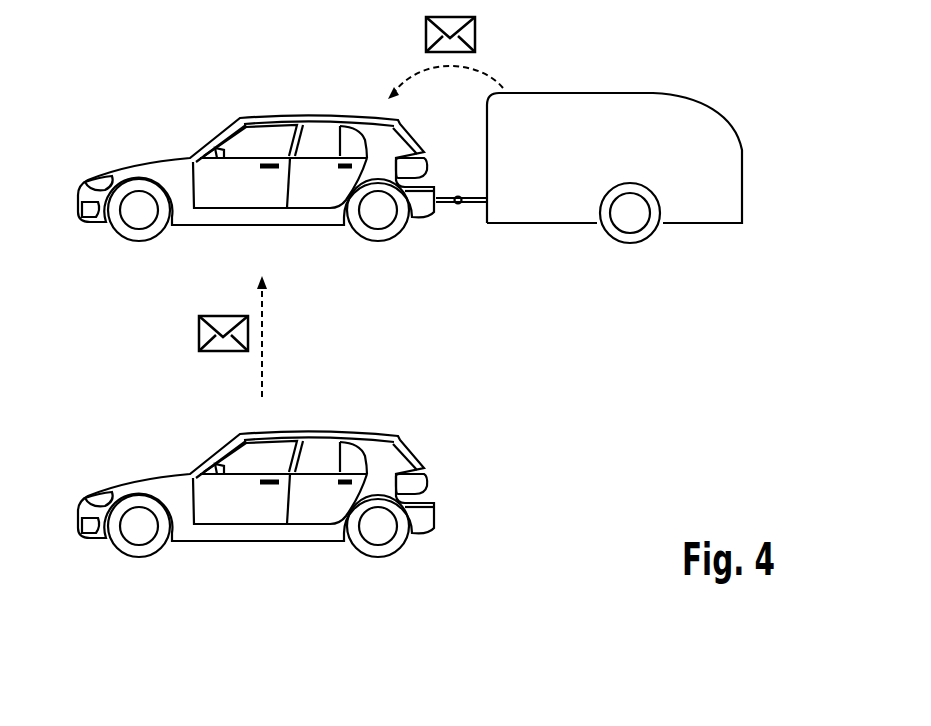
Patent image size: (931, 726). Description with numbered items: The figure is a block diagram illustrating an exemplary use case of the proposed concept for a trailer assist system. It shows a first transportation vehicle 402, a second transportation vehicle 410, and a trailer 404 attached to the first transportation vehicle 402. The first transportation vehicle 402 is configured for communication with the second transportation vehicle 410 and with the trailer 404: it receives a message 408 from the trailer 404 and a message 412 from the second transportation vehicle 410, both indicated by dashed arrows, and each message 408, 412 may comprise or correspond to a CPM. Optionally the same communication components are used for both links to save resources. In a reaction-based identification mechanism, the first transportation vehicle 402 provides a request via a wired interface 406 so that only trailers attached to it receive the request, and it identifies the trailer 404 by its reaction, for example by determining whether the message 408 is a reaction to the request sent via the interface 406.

The first transportation vehicle 402 is at (135, 160).
The trailer 404 is at (646, 92).
The wired interface 406 is at (474, 205).
The message 408 is at (425, 38).
The second transportation vehicle 410 is at (135, 476).
The message 412 is at (198, 337).